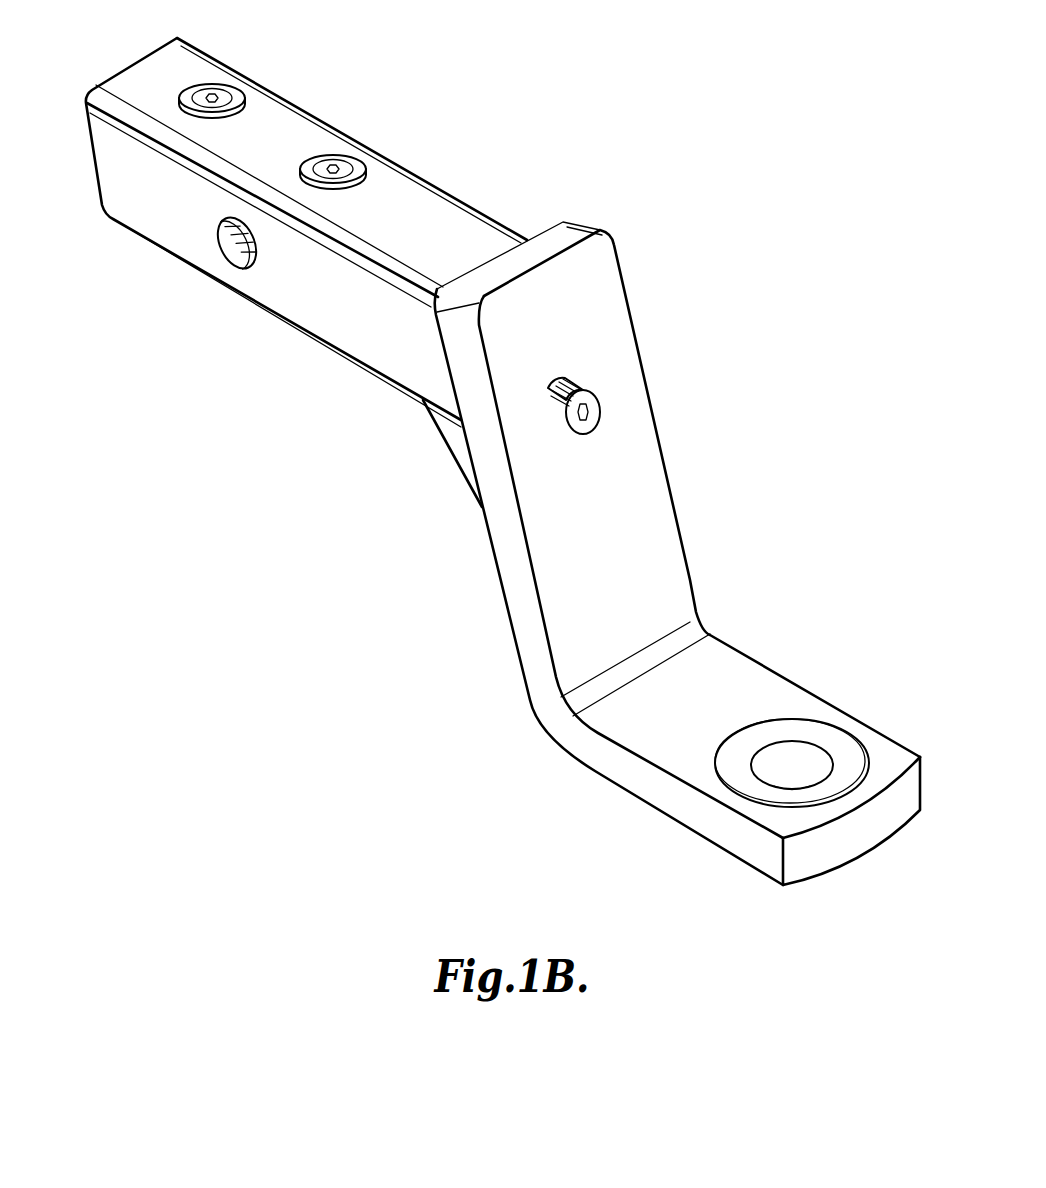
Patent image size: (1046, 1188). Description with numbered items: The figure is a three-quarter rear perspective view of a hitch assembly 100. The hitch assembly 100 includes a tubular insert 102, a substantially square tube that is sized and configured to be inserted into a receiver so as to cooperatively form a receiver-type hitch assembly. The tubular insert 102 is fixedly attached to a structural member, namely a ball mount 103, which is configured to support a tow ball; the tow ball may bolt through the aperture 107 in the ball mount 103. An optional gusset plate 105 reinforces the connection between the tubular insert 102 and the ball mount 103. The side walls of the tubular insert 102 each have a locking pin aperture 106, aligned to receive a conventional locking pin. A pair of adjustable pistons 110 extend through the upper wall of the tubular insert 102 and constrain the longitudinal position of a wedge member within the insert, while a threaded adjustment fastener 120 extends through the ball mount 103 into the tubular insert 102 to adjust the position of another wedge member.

The hitch assembly 100 is at (462, 102).
The tubular insert 102 is at (477, 204).
The ball mount 103 is at (623, 269).
The gusset plate 105 is at (456, 452).
The locking pin aperture 106 is at (223, 247).
The aperture 107 is at (800, 750).
The adjustable pistons 110 is at (233, 92).
The threaded adjustment fastener 120 is at (598, 398).